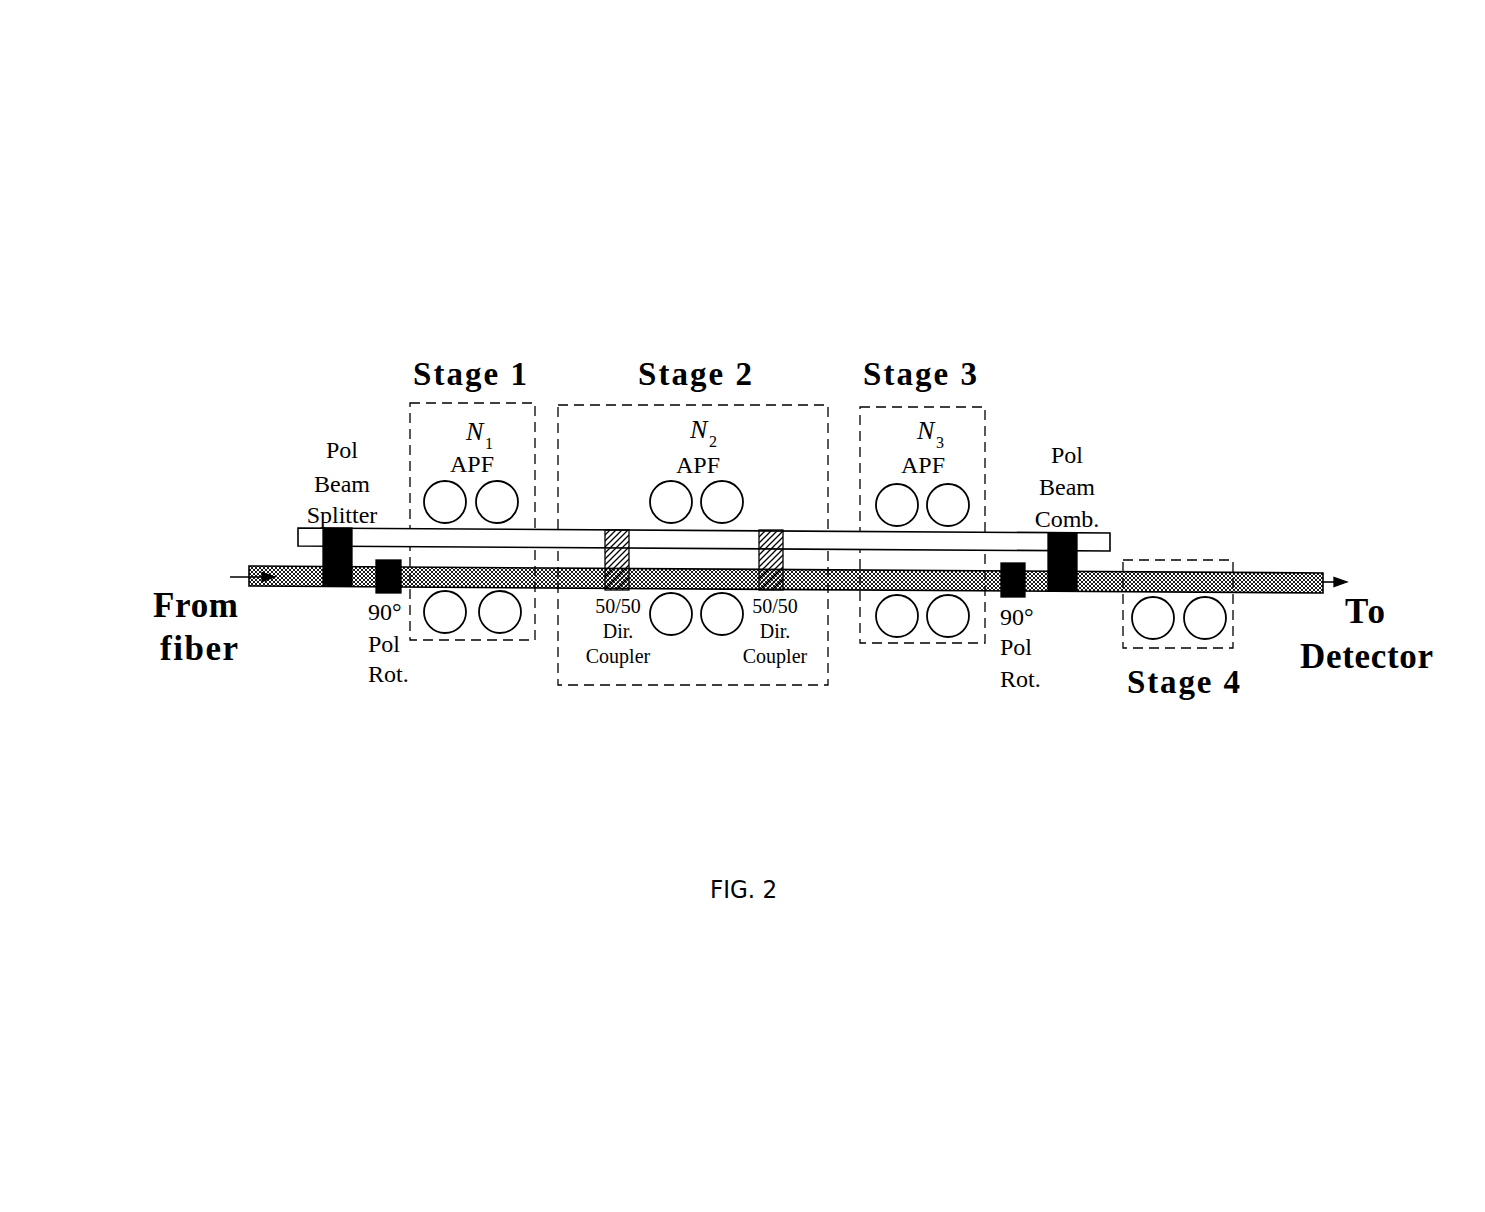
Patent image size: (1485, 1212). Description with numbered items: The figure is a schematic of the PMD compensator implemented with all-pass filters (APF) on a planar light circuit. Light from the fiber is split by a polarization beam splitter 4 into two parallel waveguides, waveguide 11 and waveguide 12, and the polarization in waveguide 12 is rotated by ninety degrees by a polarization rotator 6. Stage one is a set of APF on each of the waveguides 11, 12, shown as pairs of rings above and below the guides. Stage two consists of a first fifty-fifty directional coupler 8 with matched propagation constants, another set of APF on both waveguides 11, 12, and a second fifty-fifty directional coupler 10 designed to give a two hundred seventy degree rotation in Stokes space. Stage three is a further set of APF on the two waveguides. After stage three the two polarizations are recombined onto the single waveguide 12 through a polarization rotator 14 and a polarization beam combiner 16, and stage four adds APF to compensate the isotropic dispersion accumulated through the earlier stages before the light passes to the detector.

The polarization beam splitter 4 is at (314, 574).
The polarization rotator 6 is at (391, 593).
The 50/50 directional coupler 8 is at (602, 585).
The 50/50 directional coupler 10 is at (766, 575).
The waveguide 11 is at (390, 515).
The waveguide 12 is at (300, 592).
The polarization rotator 14 is at (1005, 593).
The polarization beam combiner 16 is at (1056, 575).